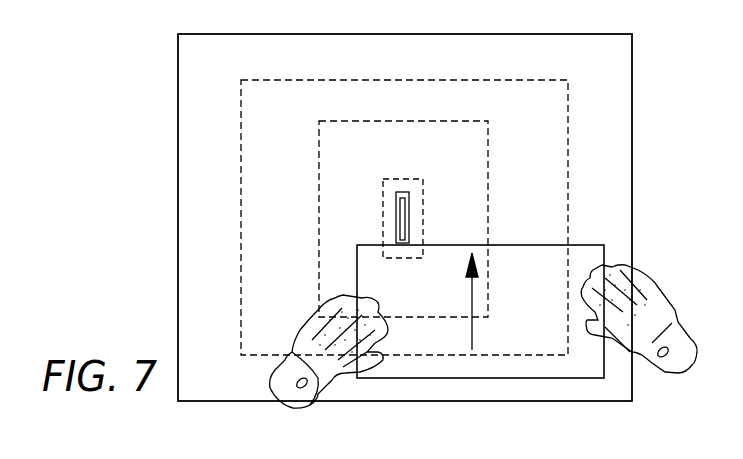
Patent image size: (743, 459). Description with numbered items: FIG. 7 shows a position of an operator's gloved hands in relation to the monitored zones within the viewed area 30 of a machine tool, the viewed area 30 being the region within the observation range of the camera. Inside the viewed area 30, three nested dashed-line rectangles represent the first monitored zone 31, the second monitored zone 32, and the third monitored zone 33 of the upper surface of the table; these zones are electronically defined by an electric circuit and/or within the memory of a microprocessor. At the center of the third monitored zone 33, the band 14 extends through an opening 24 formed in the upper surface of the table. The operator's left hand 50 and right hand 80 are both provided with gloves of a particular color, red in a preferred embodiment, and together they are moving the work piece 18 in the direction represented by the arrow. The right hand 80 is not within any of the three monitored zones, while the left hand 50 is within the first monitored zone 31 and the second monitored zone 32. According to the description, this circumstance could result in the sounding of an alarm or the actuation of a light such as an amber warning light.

The viewed area 30 is at (177, 187).
The first monitored zone 31 is at (243, 177).
The second monitored zone 32 is at (320, 178).
The third monitored zone 33 is at (400, 178).
The band 14 is at (398, 225).
The opening 24 is at (410, 213).
The work piece 18 is at (520, 245).
The left hand 50 is at (342, 385).
The right hand 80 is at (670, 302).